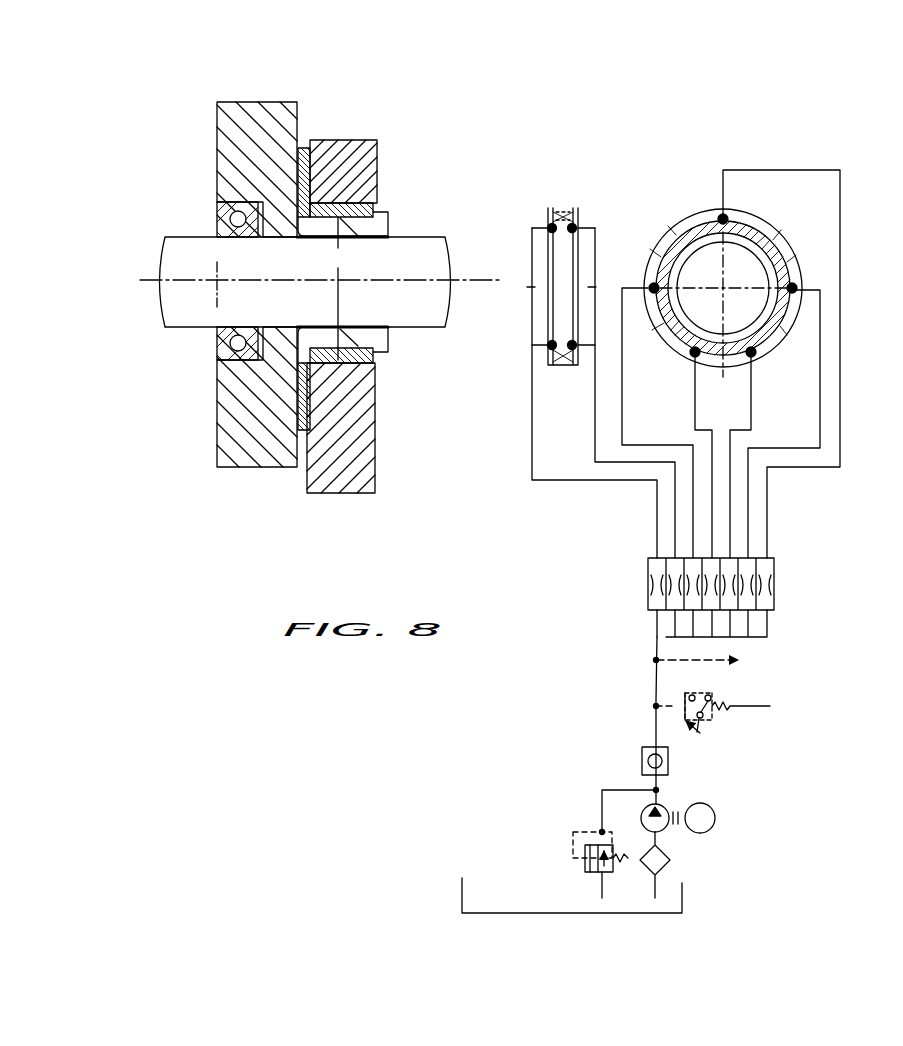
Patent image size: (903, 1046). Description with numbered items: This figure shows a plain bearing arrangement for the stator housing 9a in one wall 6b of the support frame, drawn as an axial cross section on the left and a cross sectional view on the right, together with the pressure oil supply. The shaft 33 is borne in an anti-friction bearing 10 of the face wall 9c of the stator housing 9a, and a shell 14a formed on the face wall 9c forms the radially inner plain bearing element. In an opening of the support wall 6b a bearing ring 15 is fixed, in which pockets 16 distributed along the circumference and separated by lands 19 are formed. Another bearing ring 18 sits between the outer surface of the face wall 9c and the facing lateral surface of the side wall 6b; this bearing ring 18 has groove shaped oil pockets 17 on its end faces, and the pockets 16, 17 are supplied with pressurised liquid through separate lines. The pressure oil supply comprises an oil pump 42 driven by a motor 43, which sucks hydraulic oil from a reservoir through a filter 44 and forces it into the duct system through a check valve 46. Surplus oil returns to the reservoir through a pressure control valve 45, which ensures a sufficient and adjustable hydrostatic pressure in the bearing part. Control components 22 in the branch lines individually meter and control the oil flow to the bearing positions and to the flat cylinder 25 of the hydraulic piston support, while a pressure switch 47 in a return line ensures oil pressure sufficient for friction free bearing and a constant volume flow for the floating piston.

The stator housing 9a is at (312, 98).
The face wall 9c is at (247, 452).
The anti-friction bearing 10 is at (217, 350).
The shell 14a is at (368, 221).
The bearing ring 15 is at (377, 362).
The pockets 16 is at (872, 256).
The oil pockets 17 is at (342, 163).
The bearing ring 18 is at (312, 168).
The lands 19 is at (775, 353).
The control components 22 is at (767, 557).
The flat cylinder 25 is at (724, 661).
The shaft 33 is at (403, 315).
The wall 6b is at (362, 430).
The oil pump 42 is at (652, 810).
The motor 43 is at (716, 818).
The filter 44 is at (670, 860).
The pressure control valve 45 is at (587, 853).
The check valve 46 is at (670, 765).
The pressure switch 47 is at (727, 713).